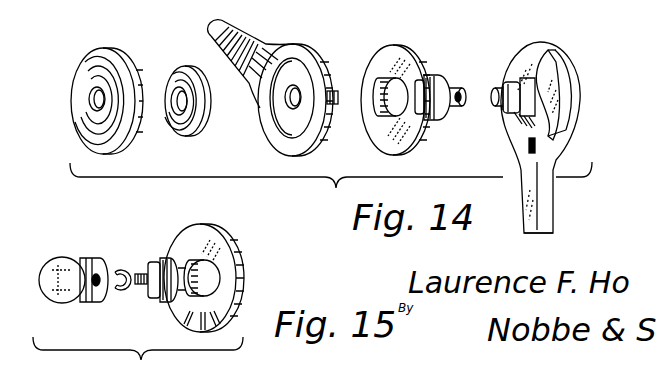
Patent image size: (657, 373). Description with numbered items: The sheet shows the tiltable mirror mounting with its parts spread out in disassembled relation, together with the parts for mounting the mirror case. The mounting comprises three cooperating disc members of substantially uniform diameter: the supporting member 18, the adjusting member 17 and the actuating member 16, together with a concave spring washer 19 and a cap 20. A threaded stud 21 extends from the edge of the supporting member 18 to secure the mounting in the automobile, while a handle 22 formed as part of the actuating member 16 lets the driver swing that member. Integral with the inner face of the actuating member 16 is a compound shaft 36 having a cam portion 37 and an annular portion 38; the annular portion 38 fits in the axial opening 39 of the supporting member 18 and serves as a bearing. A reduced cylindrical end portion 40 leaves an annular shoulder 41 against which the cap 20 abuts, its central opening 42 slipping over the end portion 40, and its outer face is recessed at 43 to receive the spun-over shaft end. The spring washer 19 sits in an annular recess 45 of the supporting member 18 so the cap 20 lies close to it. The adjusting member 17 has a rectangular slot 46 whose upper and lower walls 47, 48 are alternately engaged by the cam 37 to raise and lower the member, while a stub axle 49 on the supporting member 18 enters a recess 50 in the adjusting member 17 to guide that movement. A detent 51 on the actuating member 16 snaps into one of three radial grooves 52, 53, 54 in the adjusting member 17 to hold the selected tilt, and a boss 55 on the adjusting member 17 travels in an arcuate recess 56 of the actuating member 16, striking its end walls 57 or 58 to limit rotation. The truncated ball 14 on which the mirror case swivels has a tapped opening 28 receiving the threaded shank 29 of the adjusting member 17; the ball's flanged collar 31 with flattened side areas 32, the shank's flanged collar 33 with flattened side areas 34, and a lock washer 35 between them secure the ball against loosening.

In FIG. 15, the truncated ball 14 is at (61, 262).
In FIG. 14, the actuating member 16 is at (532, 54).
In FIG. 14, the adjusting member 17 is at (399, 60).
In FIG. 15, the adjusting member 17 is at (221, 243).
In FIG. 14, the supporting member 18 is at (286, 54).
In FIG. 14, the spring washer 19 is at (190, 96).
In FIG. 14, the cap 20 is at (110, 72).
In FIG. 14, the threaded stud 21 is at (233, 36).
In FIG. 14, the handle 22 is at (536, 198).
In FIG. 15, the tapped opening 28 is at (97, 276).
In FIG. 14, the threaded shank 29 is at (458, 92).
In FIG. 15, the threaded shank 29 is at (141, 270).
In FIG. 15, the flanged collar 31 is at (88, 258).
In FIG. 15, the flattened side areas 32 is at (108, 270).
In FIG. 14, the flanged collar 33 is at (430, 82).
In FIG. 15, the flanged collar 33 is at (158, 262).
In FIG. 14, the flattened side areas 34 is at (427, 114).
In FIG. 15, the flattened side areas 34 is at (153, 296).
In FIG. 15, the lock washer 35 is at (120, 292).
In FIG. 14, the compound shaft 36 is at (497, 78).
In FIG. 14, the cam portion 37 is at (516, 78).
In FIG. 14, the annular portion 38 is at (514, 116).
In FIG. 14, the axial opening 39 is at (297, 87).
In FIG. 14, the reduced cylindrical end portion 40 is at (496, 100).
In FIG. 14, the annular shoulder 41 is at (507, 108).
In FIG. 14, the central opening 42 is at (89, 98).
In FIG. 14, the recess 43 is at (91, 107).
In FIG. 14, the annular recess 45 is at (277, 117).
In FIG. 14, the rectangular slot 46 is at (380, 103).
In FIG. 15, the rectangular slot 46 is at (221, 273).
In FIG. 14, the upper wall 47 is at (388, 76).
In FIG. 15, the upper wall 47 is at (216, 256).
In FIG. 14, the lower wall 48 is at (388, 116).
In FIG. 15, the lower wall 48 is at (221, 286).
In FIG. 14, the stub axle 49 is at (334, 93).
In FIG. 14, the recess 50 is at (427, 77).
In FIG. 15, the recess 50 is at (177, 262).
In FIG. 14, the detent 51 is at (528, 148).
In FIG. 15, the radial groove 52 is at (222, 318).
In FIG. 15, the radial groove 53 is at (194, 324).
In FIG. 15, the radial groove 54 is at (186, 320).
In FIG. 15, the boss 55 is at (203, 255).
In FIG. 14, the arcuately shaped recess 56 is at (558, 80).
In FIG. 14, the end wall 57 is at (553, 55).
In FIG. 14, the end wall 58 is at (560, 133).